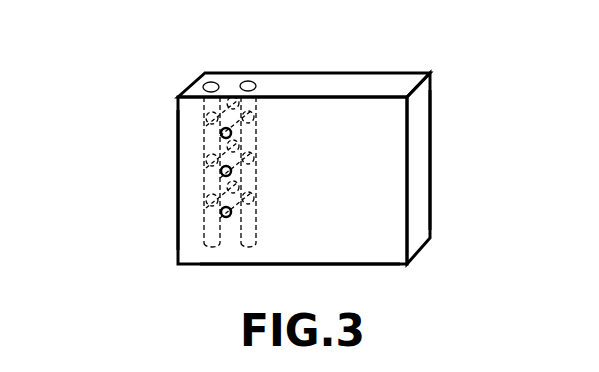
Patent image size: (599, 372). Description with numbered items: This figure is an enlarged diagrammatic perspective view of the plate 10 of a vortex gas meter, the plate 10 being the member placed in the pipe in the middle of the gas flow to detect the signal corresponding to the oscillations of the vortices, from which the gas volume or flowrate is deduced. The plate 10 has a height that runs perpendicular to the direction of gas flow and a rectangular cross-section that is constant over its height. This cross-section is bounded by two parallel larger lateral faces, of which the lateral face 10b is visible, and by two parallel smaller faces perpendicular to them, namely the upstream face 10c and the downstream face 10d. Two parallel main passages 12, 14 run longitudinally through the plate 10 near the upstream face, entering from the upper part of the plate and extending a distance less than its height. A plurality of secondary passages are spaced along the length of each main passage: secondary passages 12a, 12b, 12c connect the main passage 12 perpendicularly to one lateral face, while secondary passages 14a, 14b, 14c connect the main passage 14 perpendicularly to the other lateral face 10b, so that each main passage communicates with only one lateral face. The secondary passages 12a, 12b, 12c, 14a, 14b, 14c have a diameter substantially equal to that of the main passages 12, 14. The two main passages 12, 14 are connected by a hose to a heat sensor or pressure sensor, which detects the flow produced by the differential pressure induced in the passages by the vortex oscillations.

The plate 10 is at (327, 61).
The lateral face 10b is at (377, 250).
The upstream face 10c is at (178, 232).
The downstream face 10d is at (419, 211).
The main passage 12 is at (210, 72).
The secondary passage 12a is at (208, 116).
The secondary passage 12b is at (208, 160).
The secondary passage 12c is at (208, 200).
The main passage 14 is at (247, 80).
The secondary passage 14a is at (231, 133).
The secondary passage 14b is at (231, 171).
The secondary passage 14c is at (231, 212).